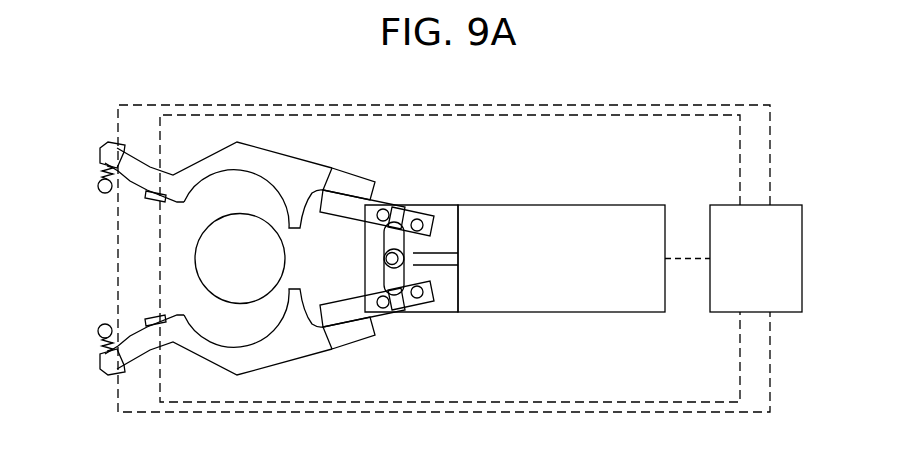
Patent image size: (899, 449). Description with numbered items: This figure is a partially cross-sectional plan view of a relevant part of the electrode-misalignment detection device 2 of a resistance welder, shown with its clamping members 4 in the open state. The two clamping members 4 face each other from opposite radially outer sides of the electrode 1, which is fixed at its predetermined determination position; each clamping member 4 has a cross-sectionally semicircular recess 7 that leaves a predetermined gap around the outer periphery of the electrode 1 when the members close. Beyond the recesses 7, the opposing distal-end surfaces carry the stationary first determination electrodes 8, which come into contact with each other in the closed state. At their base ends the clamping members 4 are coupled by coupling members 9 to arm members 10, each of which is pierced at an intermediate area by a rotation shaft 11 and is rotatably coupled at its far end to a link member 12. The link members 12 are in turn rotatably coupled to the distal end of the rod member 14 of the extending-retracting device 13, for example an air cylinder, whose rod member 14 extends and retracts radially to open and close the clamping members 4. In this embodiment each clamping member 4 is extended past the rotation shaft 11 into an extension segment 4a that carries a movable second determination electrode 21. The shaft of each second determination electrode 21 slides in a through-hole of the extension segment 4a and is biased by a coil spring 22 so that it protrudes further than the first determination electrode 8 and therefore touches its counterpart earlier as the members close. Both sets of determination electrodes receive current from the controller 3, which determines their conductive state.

The electrode 1 is at (195, 257).
The electrode-misalignment detection device 2 is at (560, 330).
The controller 3 is at (802, 258).
The clamping member 4 is at (200, 158).
The extension segment 4a is at (100, 150).
The recess 7 is at (251, 172).
The first determination electrode 8 is at (151, 202).
The coupling member 9 is at (352, 174).
The arm member 10 is at (338, 218).
The rotation shaft 11 is at (386, 207).
The link member 12 is at (402, 208).
The extending-retracting device 13 is at (560, 205).
The rod member 14 is at (443, 250).
The second determination electrode 21 is at (104, 193).
The coil spring 22 is at (102, 172).